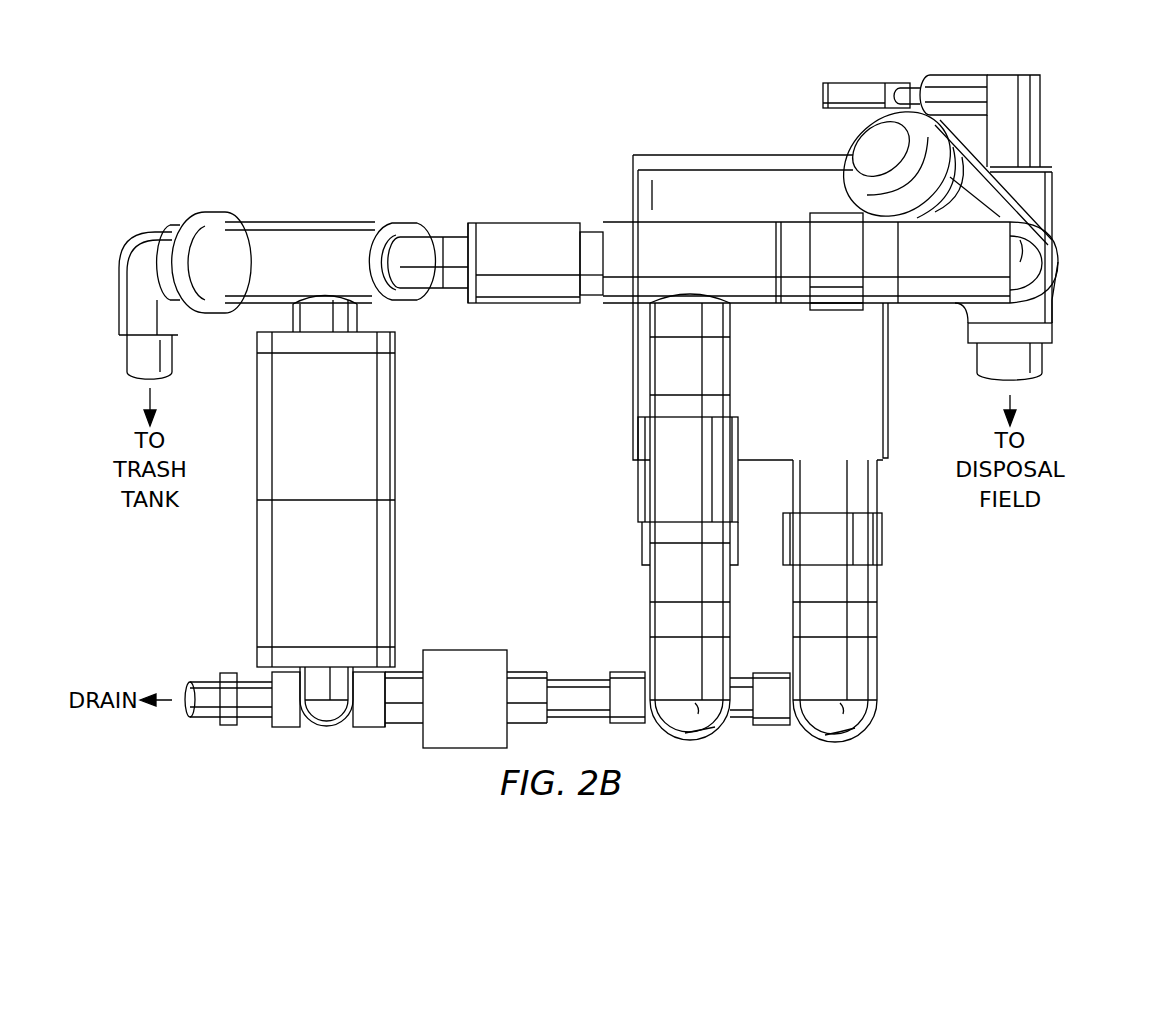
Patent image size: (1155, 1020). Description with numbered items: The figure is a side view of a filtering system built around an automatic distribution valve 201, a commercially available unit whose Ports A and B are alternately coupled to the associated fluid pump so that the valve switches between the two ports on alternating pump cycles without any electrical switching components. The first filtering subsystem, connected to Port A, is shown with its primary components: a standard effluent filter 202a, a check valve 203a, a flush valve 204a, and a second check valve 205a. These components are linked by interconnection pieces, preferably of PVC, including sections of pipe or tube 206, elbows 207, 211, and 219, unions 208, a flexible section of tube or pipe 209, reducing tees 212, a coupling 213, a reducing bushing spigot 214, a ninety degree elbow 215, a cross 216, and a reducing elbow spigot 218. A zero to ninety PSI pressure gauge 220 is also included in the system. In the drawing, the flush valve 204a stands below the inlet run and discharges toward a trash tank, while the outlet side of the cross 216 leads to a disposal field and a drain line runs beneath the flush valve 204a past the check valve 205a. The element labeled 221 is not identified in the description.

The automatic distribution valve 201 is at (893, 395).
The effluent filter 202a is at (1060, 262).
The check valve 203a is at (637, 480).
The flush valve 204a is at (256, 570).
The check valve 205a is at (424, 737).
The sections of pipe or tube 206 is at (590, 228).
The elbow 207 is at (920, 307).
The union 208 is at (833, 312).
The flexible section of tube or pipe 209 is at (572, 673).
The elbow 211 is at (436, 236).
The reducing tee 212 is at (626, 672).
The coupling 213 is at (522, 222).
The reducing bushing spigot 214 is at (474, 222).
The 90 degree elbow 215 is at (1040, 113).
The cross 216 is at (1053, 333).
The reducing elbow spigot 218 is at (926, 75).
The elbow 219 is at (707, 736).
The pressure gauge 220 is at (1053, 168).
The control box 221 is at (857, 83).